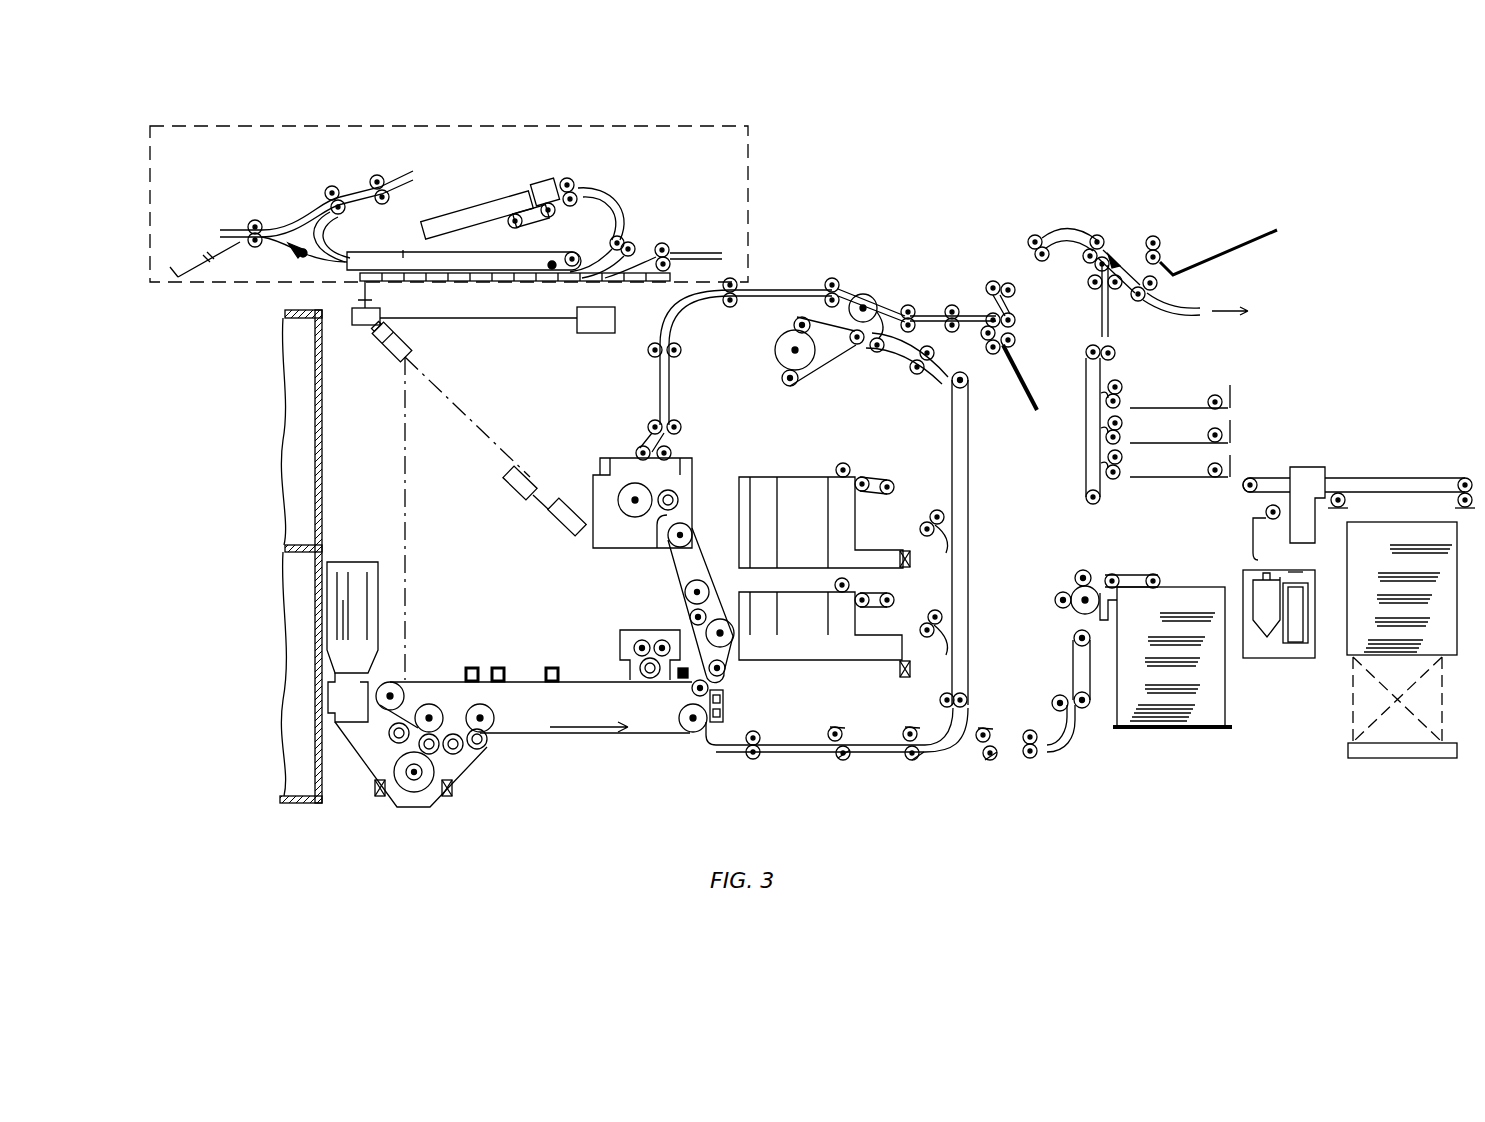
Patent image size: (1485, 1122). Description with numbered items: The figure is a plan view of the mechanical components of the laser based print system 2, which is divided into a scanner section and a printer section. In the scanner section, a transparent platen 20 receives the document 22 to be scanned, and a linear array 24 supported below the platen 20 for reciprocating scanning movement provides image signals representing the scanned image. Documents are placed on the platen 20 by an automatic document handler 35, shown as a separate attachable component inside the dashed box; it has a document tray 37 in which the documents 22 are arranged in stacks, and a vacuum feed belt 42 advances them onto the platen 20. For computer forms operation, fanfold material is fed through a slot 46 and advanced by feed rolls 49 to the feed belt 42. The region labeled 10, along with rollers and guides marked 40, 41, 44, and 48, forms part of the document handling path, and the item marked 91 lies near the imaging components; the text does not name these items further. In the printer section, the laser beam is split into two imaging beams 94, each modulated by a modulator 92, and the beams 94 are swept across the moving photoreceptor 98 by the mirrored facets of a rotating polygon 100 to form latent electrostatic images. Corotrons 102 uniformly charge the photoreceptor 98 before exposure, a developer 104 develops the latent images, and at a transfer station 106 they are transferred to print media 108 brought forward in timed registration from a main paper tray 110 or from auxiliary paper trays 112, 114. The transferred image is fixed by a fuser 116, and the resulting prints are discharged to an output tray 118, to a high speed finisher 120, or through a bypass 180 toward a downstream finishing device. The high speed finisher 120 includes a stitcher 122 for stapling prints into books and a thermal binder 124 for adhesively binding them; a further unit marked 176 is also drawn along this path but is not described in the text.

The print system 2 is at (860, 203).
The web supply and splicing unit 10 is at (283, 212).
The transparent platen 20 is at (497, 280).
The document 22 is at (487, 199).
The linear array 24 is at (352, 310).
The automatic document handler 35 is at (500, 178).
The document tray 37 is at (455, 230).
The feed roller 40 is at (547, 220).
The web guide 41 is at (598, 186).
The vacuum feed belt 42 is at (403, 250).
The roller pair 44 is at (378, 205).
The slot 46 is at (696, 252).
The web guide plate 48 is at (229, 262).
The feed rolls 49 is at (670, 248).
The sensor 91 is at (560, 530).
The modulator 92 is at (540, 470).
The imaging beams 94 is at (455, 390).
The photoreceptor 98 is at (592, 680).
The rotating polygon 100 is at (395, 357).
The corotrons 102 is at (552, 668).
The developer 104 is at (470, 765).
The transfer station 106 is at (700, 744).
The print media 108 is at (1212, 700).
The main paper tray 110 is at (1175, 732).
The auxiliary paper tray 112 is at (790, 662).
The auxiliary paper tray 114 is at (790, 477).
The fuser 116 is at (703, 492).
The output tray 118 is at (1262, 248).
The high speed finisher 120 is at (1277, 413).
The stitcher 122 is at (1310, 467).
The thermal binder 124 is at (1326, 626).
The folding unit 176 is at (979, 292).
The bypass 180 is at (1183, 300).